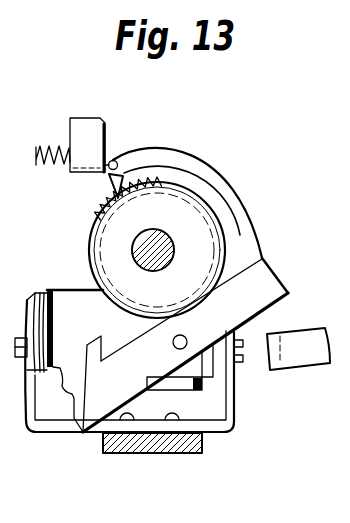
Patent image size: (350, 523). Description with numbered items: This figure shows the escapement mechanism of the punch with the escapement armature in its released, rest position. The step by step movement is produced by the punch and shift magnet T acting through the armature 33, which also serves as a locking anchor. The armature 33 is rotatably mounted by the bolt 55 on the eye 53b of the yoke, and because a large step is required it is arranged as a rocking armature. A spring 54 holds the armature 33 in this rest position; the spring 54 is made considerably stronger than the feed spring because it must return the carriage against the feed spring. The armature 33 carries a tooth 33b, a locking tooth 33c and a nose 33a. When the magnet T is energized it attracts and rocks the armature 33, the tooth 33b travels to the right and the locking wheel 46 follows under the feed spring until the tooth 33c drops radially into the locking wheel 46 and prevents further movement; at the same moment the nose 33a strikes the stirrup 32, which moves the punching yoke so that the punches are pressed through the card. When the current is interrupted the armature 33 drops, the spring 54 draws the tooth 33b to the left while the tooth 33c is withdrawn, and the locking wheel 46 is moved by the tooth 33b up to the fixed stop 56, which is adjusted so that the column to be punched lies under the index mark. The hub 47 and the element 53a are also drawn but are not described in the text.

The stirrup 32 is at (313, 350).
The armature 33 is at (180, 163).
The nose 33a is at (268, 293).
The tooth 33b is at (118, 180).
The tooth 33c is at (93, 352).
The locking wheel 46 is at (187, 248).
The hub shaft 47 is at (158, 247).
The shell wall 53a is at (50, 303).
The eye 53b is at (192, 368).
The spring 54 is at (50, 152).
The bolt 55 is at (180, 342).
The fixed stop 56 is at (85, 136).
The punch and shift magnet T is at (77, 303).